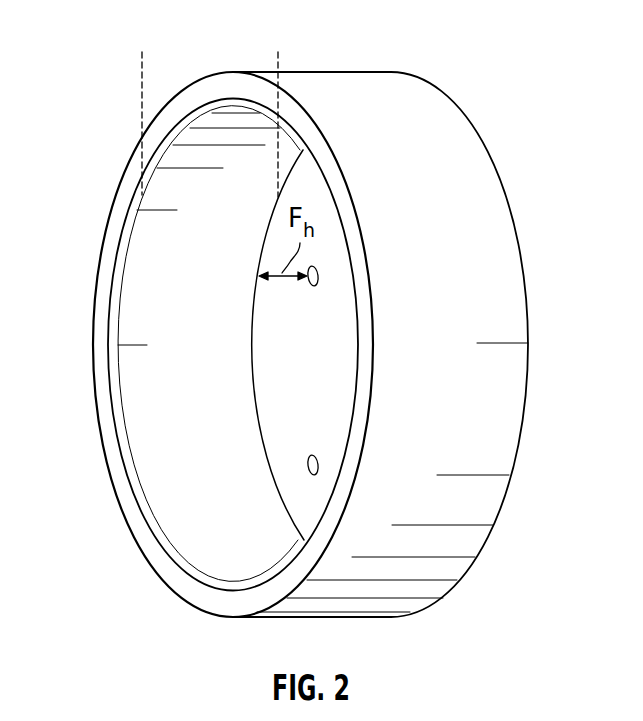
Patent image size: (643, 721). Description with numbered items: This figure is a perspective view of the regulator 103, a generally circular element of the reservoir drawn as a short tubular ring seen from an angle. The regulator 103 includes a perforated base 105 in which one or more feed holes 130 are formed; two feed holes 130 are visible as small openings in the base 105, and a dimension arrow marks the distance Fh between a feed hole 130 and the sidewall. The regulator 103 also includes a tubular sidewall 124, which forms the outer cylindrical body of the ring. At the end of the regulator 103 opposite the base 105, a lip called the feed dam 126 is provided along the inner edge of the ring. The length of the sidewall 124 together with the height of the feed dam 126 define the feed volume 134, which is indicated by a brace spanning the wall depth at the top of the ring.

The regulator 103 is at (337, 82).
The perforated base 105 is at (293, 378).
The tubular sidewall 124 is at (135, 381).
The feed dam 126 is at (134, 477).
The feed holes 130 is at (313, 287).
The feed volume 134 is at (278, 53).